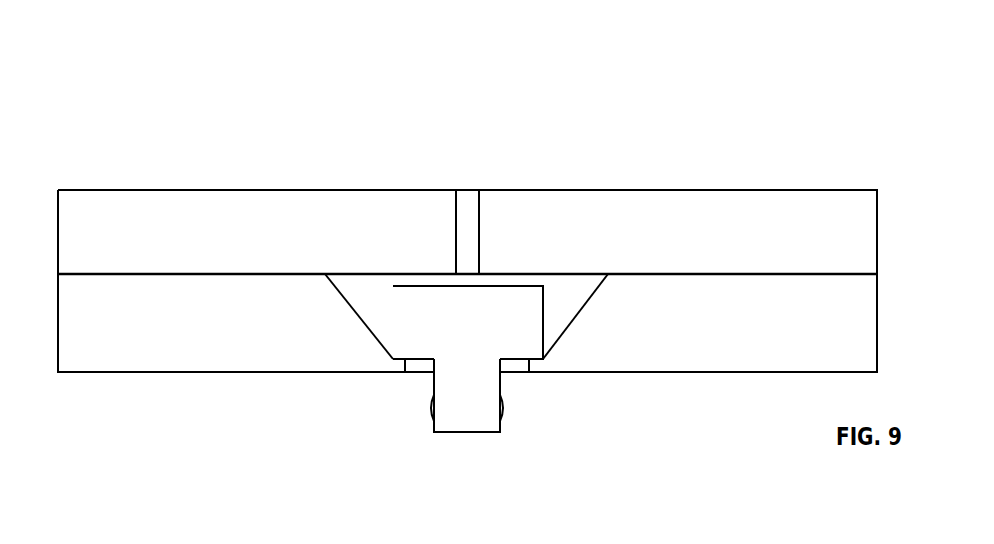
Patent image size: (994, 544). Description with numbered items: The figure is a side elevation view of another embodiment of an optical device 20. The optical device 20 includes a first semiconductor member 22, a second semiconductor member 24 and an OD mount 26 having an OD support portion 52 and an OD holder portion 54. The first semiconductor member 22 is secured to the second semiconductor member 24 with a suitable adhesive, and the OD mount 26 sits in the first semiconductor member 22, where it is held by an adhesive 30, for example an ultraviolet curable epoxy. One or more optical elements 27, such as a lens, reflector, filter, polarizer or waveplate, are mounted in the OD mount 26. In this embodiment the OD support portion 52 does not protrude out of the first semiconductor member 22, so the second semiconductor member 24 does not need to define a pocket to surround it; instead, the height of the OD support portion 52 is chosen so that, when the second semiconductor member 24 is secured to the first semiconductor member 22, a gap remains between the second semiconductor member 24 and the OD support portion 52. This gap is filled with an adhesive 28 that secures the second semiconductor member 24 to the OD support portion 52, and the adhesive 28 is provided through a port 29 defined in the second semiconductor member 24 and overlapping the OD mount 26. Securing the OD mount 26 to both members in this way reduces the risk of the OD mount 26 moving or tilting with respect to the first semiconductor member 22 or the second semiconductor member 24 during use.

The optical device 20 is at (202, 158).
The first semiconductor member 22 is at (450, 359).
The second semiconductor member 24 is at (489, 199).
The OD mount 26 is at (578, 406).
The optical element 27 is at (432, 408).
The adhesive 28 is at (418, 281).
The port 29 is at (467, 193).
The adhesive 30 is at (543, 358).
The OD support portion 52 is at (543, 317).
The OD holder portion 54 is at (483, 397).